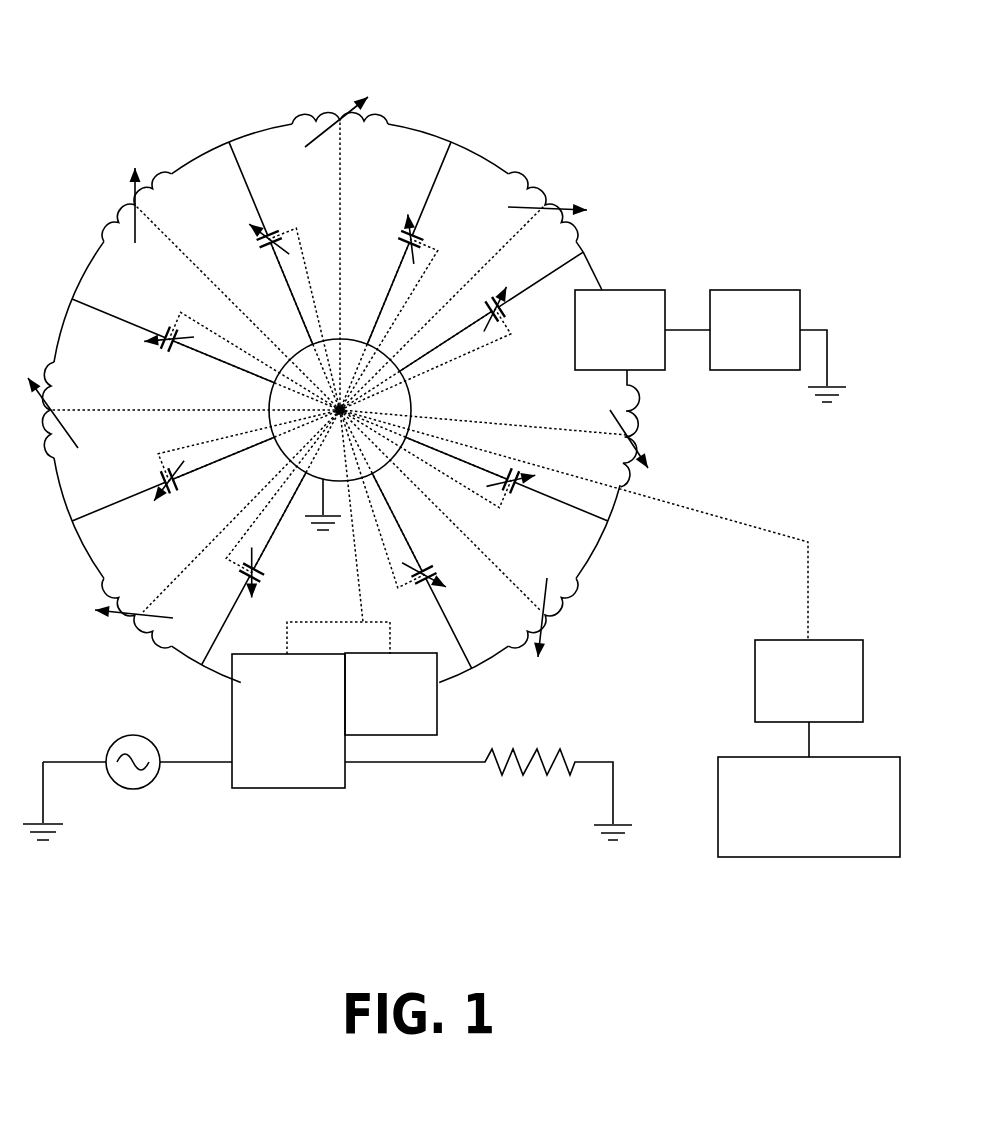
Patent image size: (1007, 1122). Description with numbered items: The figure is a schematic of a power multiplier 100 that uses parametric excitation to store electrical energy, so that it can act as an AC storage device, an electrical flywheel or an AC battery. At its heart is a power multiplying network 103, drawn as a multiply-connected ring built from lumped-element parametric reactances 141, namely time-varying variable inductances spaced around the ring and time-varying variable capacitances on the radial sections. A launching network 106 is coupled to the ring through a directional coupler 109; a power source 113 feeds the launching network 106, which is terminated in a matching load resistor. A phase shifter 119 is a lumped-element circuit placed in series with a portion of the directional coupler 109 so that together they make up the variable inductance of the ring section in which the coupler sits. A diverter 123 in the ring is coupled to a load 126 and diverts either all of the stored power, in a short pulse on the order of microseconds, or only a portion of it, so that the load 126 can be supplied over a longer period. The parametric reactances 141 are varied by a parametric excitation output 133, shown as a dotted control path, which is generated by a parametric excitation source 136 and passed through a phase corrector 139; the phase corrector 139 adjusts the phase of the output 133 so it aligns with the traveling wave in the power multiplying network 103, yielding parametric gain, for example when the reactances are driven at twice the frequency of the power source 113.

The power multiplier 100 is at (452, 433).
The power multiplying network 103 is at (220, 148).
The launching network 106 is at (194, 766).
The directional coupler 109 is at (272, 755).
The power source 113 is at (119, 736).
The phase shifter 119 is at (375, 726).
The diverter 123 is at (604, 350).
The load 126 is at (739, 350).
The parametric excitation output 133 is at (737, 518).
The parametric excitation source 136 is at (793, 840).
The phase corrector 139 is at (793, 715).
The parametric reactances 141 is at (277, 228).